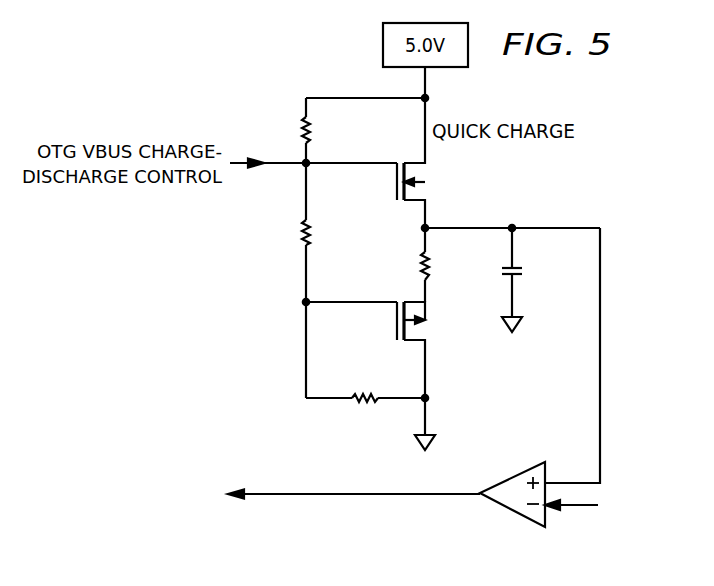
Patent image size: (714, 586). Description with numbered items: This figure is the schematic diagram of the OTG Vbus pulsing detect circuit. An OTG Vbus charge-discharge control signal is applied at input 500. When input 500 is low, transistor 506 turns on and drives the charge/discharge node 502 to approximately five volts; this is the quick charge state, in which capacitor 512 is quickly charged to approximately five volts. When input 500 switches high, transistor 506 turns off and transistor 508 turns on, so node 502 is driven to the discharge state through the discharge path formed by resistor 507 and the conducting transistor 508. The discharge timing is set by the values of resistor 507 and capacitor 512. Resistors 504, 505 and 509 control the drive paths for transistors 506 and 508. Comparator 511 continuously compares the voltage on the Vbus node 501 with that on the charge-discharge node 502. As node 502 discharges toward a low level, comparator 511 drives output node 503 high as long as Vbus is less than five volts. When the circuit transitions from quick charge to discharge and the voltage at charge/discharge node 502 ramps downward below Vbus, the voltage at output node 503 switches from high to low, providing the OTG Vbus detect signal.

The input 500 is at (276, 165).
The Vbus node 501 is at (578, 508).
The charge/discharge node 502 is at (601, 357).
The output node 503 is at (355, 496).
The resistor 504 is at (302, 129).
The resistor 505 is at (303, 240).
The transistor 506 is at (397, 190).
The resistor 507 is at (421, 268).
The transistor 508 is at (397, 328).
The resistor 509 is at (363, 401).
The comparator 511 is at (515, 512).
The capacitor 512 is at (525, 271).